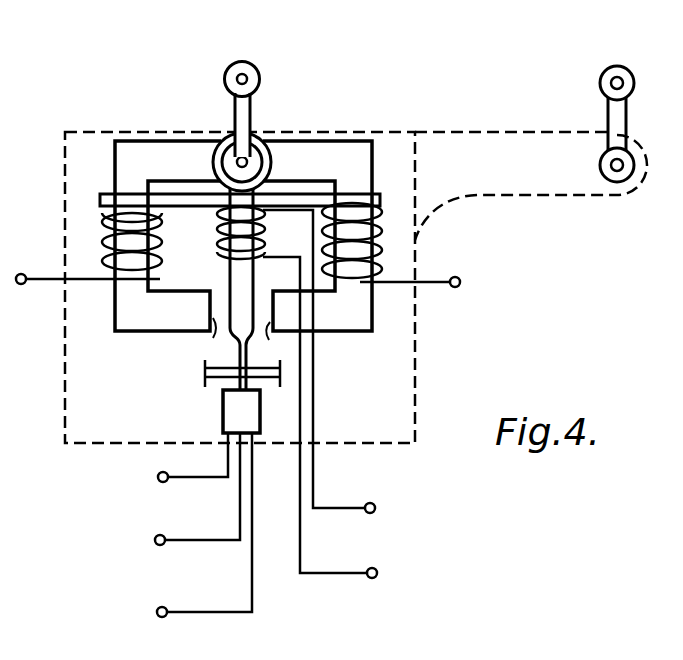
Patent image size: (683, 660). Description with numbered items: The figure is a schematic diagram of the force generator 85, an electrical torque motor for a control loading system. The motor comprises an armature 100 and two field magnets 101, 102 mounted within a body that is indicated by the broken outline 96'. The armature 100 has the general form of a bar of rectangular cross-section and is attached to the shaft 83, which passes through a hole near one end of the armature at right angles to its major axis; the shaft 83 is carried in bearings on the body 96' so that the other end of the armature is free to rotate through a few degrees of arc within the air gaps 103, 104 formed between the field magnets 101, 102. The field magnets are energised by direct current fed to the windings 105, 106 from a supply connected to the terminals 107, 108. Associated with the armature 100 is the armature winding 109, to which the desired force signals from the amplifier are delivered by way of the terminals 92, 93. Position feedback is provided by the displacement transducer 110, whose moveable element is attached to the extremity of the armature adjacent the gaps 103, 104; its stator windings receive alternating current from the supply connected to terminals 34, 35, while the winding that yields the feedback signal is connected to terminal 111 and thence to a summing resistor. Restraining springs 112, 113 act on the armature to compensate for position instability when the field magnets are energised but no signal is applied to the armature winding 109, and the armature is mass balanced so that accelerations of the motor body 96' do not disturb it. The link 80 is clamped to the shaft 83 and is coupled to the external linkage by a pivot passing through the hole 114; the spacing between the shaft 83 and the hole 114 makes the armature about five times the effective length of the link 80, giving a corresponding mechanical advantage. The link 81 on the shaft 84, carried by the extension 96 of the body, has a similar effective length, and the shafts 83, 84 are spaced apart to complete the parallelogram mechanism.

The pivot hole 114 is at (243, 70).
The link 80 is at (253, 113).
The shaft 83 is at (235, 148).
The field magnet 101 is at (148, 152).
The field magnet 102 is at (345, 152).
The winding 105 is at (100, 232).
The armature winding 109 is at (218, 234).
The winding 106 is at (384, 259).
The terminal 107 is at (22, 285).
The terminal 108 is at (462, 283).
The air gap 103 is at (216, 326).
The air gap 104 is at (266, 332).
The armature 100 is at (232, 332).
The restraining spring 112 is at (217, 383).
The restraining spring 113 is at (280, 386).
The displacement transducer 110 is at (250, 423).
The terminal 34 is at (158, 479).
The terminal 35 is at (155, 539).
The terminal 111 is at (157, 613).
The terminal 92 is at (376, 507).
The terminal 93 is at (378, 573).
The extension of the body 96 is at (531, 187).
The body 96' is at (313, 287).
The link 81 is at (612, 107).
The shaft 84 is at (606, 163).
The force generator 85 is at (523, 351).